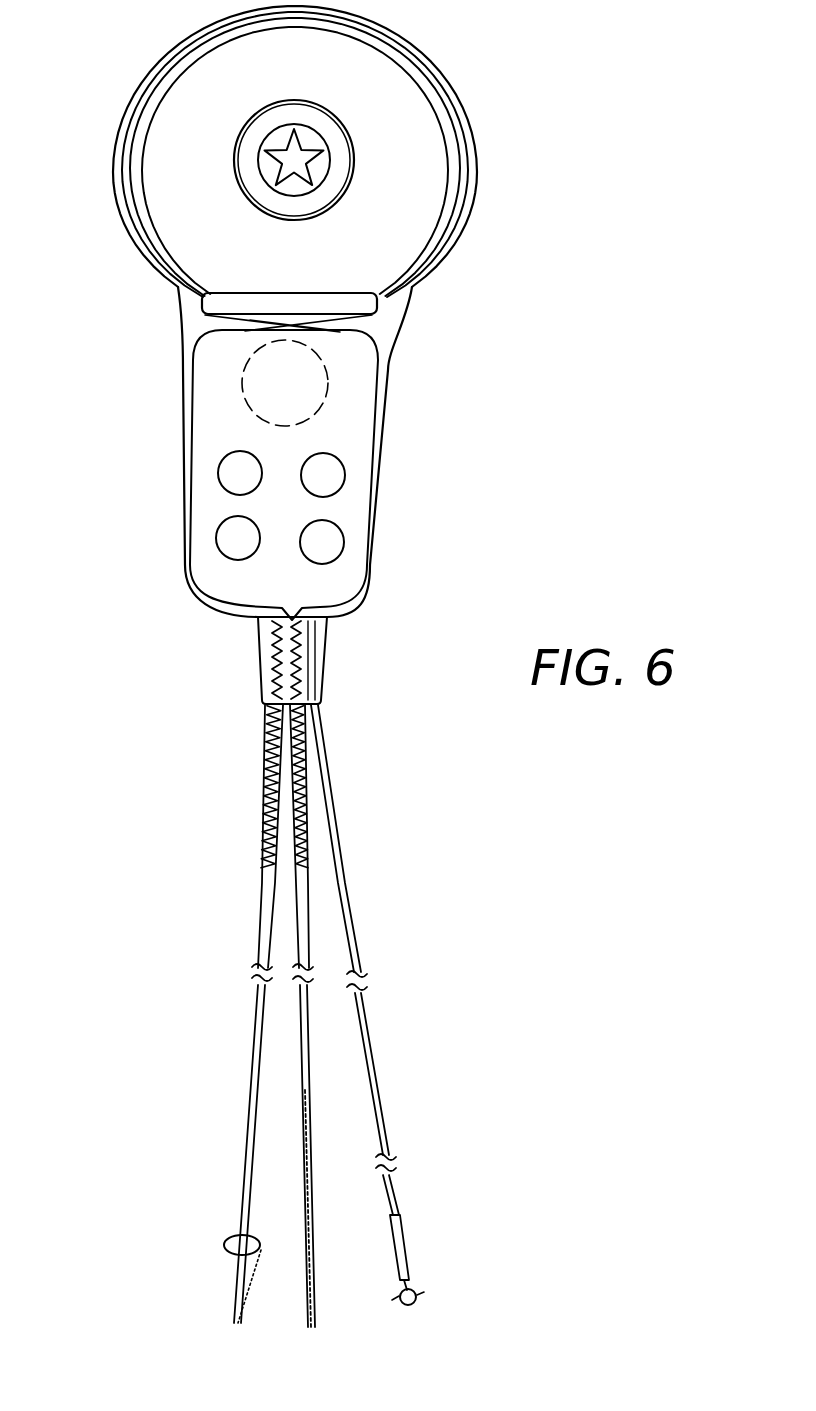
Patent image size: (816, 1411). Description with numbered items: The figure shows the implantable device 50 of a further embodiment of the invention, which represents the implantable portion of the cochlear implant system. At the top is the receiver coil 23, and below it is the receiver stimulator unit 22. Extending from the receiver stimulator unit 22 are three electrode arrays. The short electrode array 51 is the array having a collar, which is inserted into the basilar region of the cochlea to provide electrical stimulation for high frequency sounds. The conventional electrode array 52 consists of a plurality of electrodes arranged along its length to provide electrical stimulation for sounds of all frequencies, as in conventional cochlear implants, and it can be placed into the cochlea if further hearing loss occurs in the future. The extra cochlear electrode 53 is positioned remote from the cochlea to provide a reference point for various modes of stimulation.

The implantable device 50 is at (503, 500).
The receiver coil 23 is at (475, 187).
The receiver stimulator unit 22 is at (207, 498).
The short electrode array 51 is at (237, 1287).
The conventional electrode array 52 is at (313, 1327).
The extra cochlear electrode 53 is at (372, 1047).